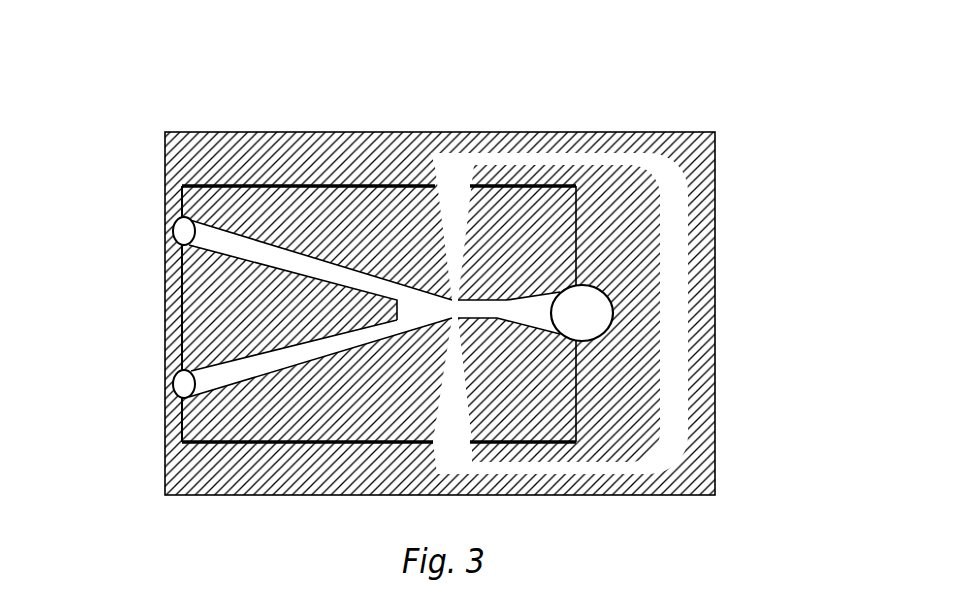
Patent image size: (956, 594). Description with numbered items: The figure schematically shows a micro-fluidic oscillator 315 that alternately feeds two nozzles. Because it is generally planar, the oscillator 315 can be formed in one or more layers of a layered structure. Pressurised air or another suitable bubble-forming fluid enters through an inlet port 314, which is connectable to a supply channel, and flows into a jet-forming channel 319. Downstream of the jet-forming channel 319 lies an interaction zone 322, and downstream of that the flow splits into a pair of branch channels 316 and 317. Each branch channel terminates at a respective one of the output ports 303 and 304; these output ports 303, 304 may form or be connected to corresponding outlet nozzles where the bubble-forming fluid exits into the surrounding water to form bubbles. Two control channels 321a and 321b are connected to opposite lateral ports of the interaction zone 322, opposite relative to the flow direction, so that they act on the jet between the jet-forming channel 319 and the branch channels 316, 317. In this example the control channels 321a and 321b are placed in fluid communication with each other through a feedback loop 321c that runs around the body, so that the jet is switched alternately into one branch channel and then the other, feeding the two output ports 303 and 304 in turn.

The output port 303 is at (180, 232).
The output port 304 is at (180, 383).
The inlet port 314 is at (590, 313).
The micro-fluidic oscillator 315 is at (539, 118).
The branch channel 316 is at (228, 247).
The branch channel 317 is at (242, 367).
The jet-forming channel 319 is at (525, 307).
The control channel 321a is at (455, 215).
The control channel 321b is at (453, 410).
The feedback loop 321c is at (670, 305).
The interaction zone 322 is at (437, 307).